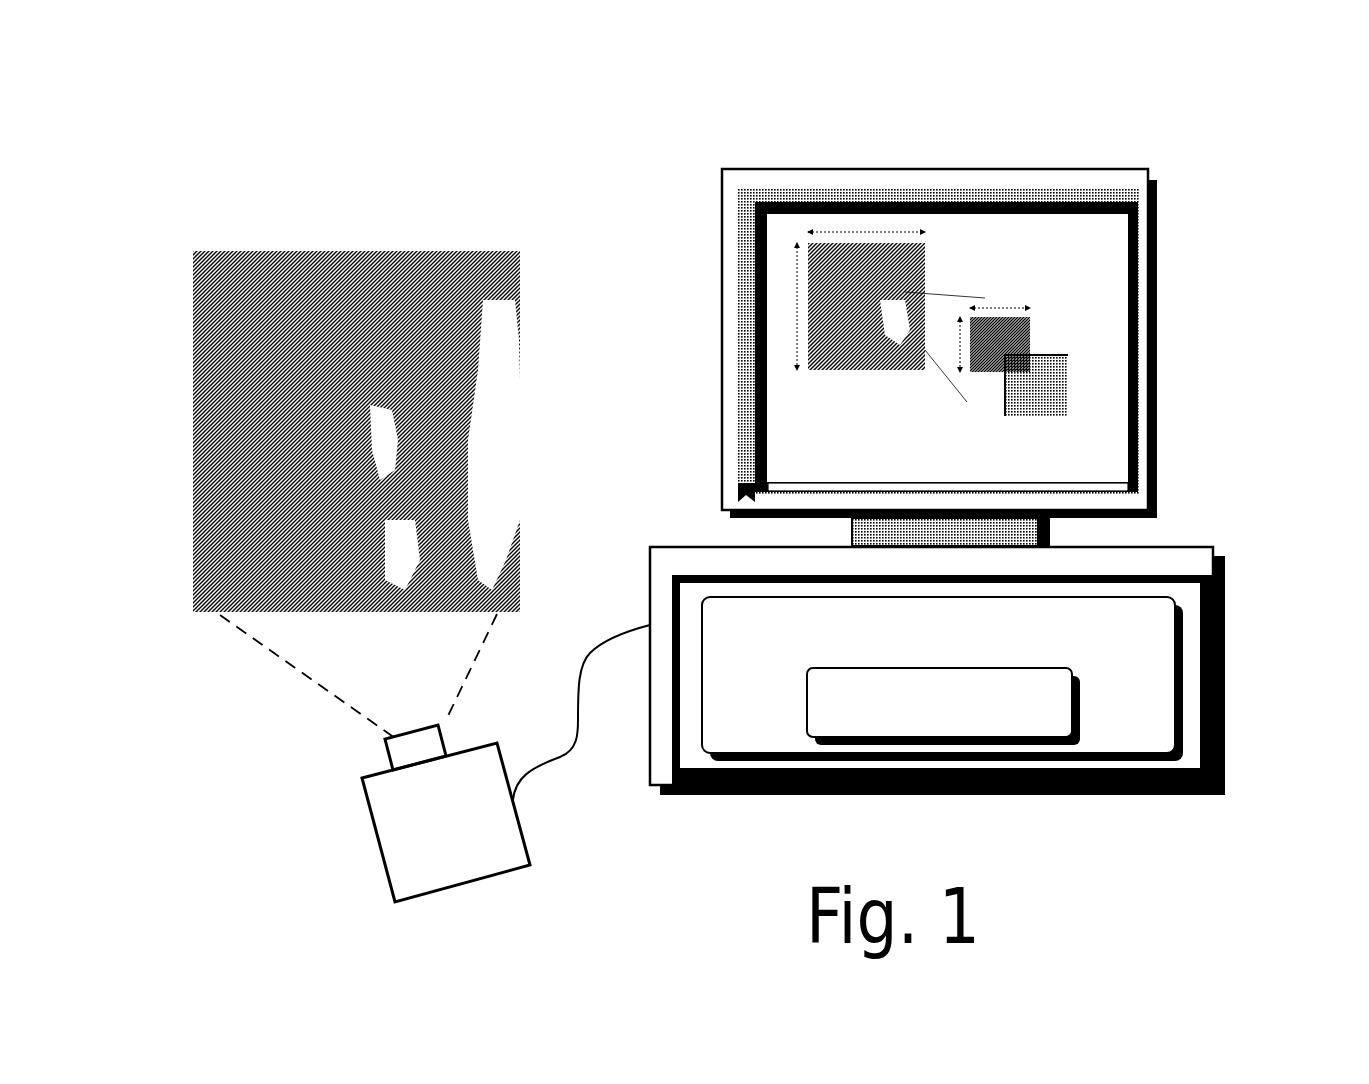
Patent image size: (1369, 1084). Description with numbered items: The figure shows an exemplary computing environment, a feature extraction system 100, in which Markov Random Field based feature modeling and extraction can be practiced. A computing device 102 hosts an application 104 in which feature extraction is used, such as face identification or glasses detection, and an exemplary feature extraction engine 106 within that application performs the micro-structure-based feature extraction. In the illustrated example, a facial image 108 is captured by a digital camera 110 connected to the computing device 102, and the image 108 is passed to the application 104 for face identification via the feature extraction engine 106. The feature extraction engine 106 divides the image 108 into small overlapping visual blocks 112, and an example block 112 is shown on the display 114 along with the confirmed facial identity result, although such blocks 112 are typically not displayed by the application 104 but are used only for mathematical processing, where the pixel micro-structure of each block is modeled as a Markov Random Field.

The feature extraction system 100 is at (186, 81).
The computing device 102 is at (994, 671).
The application 104 is at (942, 679).
The feature extraction engine 106 is at (943, 706).
The facial image 108 is at (521, 251).
The digital camera 110 is at (506, 763).
The visual block 112 is at (997, 270).
The display 114 is at (995, 357).